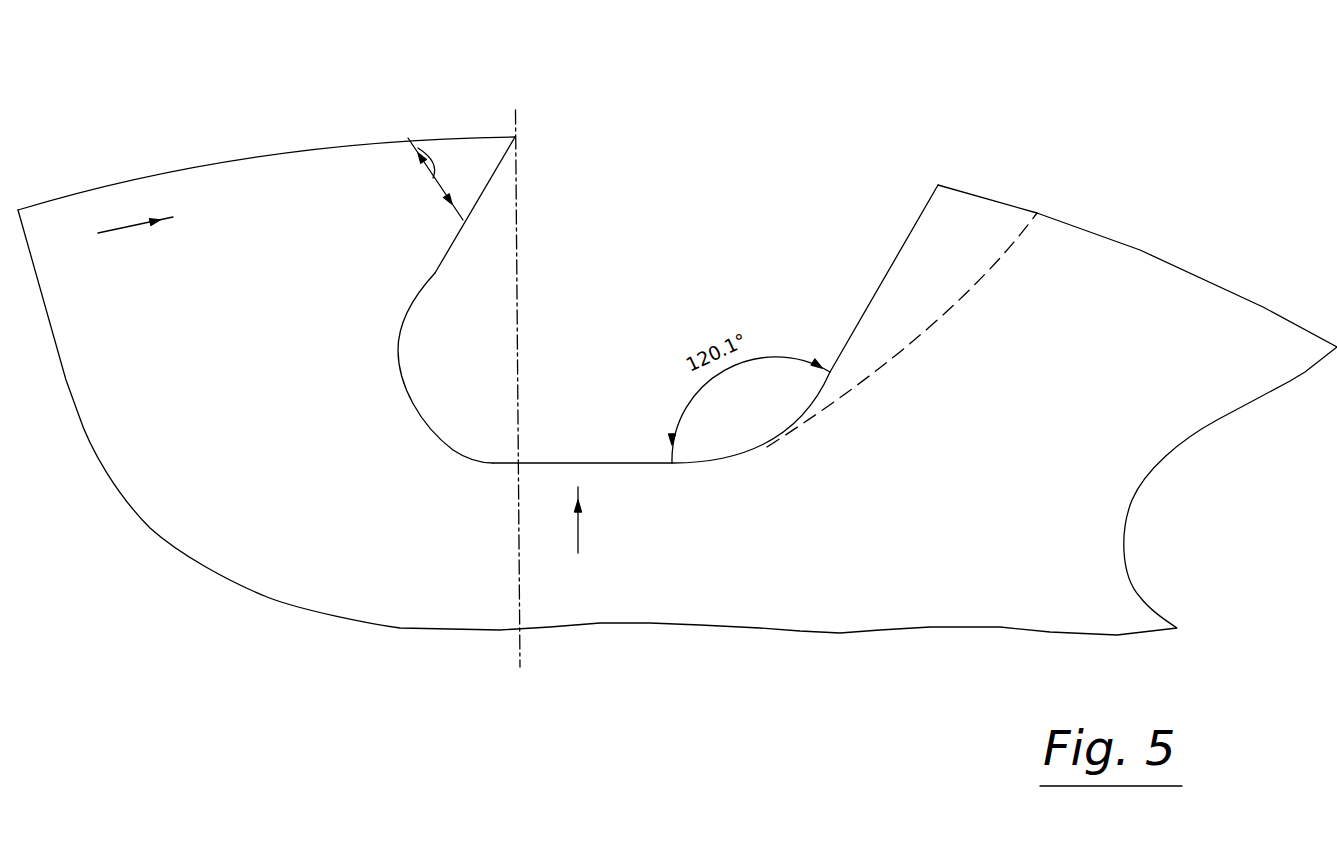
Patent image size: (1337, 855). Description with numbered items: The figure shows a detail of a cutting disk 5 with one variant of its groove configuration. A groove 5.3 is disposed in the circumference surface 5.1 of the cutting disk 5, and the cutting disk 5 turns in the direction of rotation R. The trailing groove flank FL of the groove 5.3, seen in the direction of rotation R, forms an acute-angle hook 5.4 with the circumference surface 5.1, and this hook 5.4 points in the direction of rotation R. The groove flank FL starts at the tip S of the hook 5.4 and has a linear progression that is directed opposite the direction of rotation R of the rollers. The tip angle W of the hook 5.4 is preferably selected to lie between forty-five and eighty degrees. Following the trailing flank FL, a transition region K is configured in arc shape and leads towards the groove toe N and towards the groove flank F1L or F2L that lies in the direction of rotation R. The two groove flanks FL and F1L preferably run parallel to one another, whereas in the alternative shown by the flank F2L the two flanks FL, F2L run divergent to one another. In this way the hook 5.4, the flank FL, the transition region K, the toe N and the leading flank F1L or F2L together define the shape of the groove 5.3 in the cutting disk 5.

The cutting disk 5 is at (962, 583).
The circumference surface 5.1 is at (1138, 223).
The groove 5.3 is at (725, 270).
The acute-angle hook 5.4 is at (360, 163).
The trailing groove flank FL is at (433, 280).
The groove flank lying in the direction of rotation F1L is at (877, 283).
The divergent groove flank F2L is at (960, 297).
The transition region K is at (417, 418).
The tip angle W is at (437, 173).
The tip S is at (500, 145).
The direction of rotation R is at (149, 216).
The groove toe N is at (576, 540).